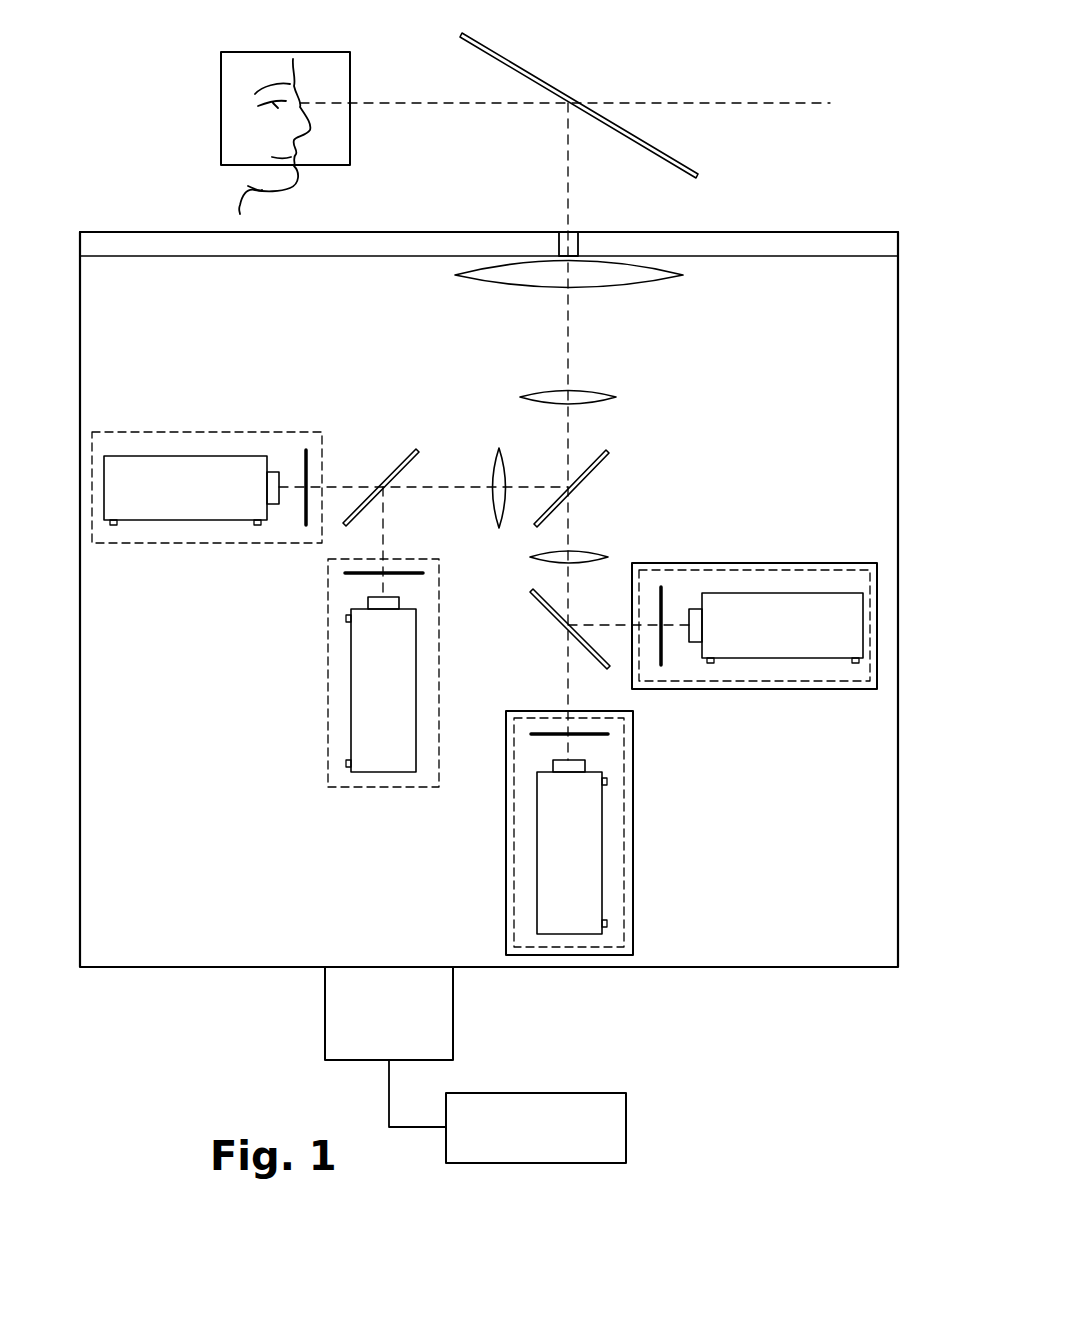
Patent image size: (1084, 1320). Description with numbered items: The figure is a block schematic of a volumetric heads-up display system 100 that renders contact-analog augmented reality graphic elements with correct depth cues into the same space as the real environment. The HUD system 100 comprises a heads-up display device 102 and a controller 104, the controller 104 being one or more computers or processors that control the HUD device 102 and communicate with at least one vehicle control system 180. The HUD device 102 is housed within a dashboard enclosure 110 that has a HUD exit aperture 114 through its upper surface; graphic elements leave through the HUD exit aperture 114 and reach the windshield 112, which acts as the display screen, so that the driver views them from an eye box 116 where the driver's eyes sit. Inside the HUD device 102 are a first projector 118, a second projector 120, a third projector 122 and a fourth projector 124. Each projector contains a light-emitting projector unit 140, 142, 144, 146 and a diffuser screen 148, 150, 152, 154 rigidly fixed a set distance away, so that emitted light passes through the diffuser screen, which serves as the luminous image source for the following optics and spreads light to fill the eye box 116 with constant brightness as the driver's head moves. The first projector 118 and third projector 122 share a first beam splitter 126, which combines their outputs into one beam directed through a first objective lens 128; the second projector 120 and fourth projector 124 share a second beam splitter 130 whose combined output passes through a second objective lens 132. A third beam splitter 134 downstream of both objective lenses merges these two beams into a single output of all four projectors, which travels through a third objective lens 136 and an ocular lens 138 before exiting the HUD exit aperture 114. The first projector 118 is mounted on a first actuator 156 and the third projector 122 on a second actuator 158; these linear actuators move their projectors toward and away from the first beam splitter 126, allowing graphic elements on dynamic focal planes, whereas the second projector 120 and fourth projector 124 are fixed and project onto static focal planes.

The volumetric heads-up display system 100 is at (312, 1048).
The heads-up display device 102 is at (625, 968).
The controller 104 is at (453, 1010).
The dashboard enclosure 110 is at (852, 245).
The windshield 112 is at (562, 90).
The HUD exit aperture 114 is at (580, 246).
The eye box 116 is at (221, 116).
The first projector 118 is at (624, 808).
The second projector 120 is at (166, 428).
The third projector 122 is at (784, 562).
The fourth projector 124 is at (322, 642).
The first beam splitter 126 is at (545, 613).
The first objective lens 128 is at (574, 553).
The second beam splitter 130 is at (402, 440).
The second objective lens 132 is at (497, 456).
The third beam splitter 134 is at (598, 463).
The third objective lens 136 is at (584, 392).
The ocular lens 138 is at (648, 276).
The projector unit 140 is at (585, 884).
The projector unit 142 is at (248, 455).
The projector unit 144 is at (825, 616).
The projector unit 146 is at (364, 704).
The diffuser screen 148 is at (540, 738).
The diffuser screen 150 is at (302, 456).
The diffuser screen 152 is at (665, 592).
The diffuser screen 154 is at (362, 578).
The first actuator 156 is at (634, 766).
The second actuator 158 is at (834, 690).
The vehicle control system 180 is at (626, 1128).